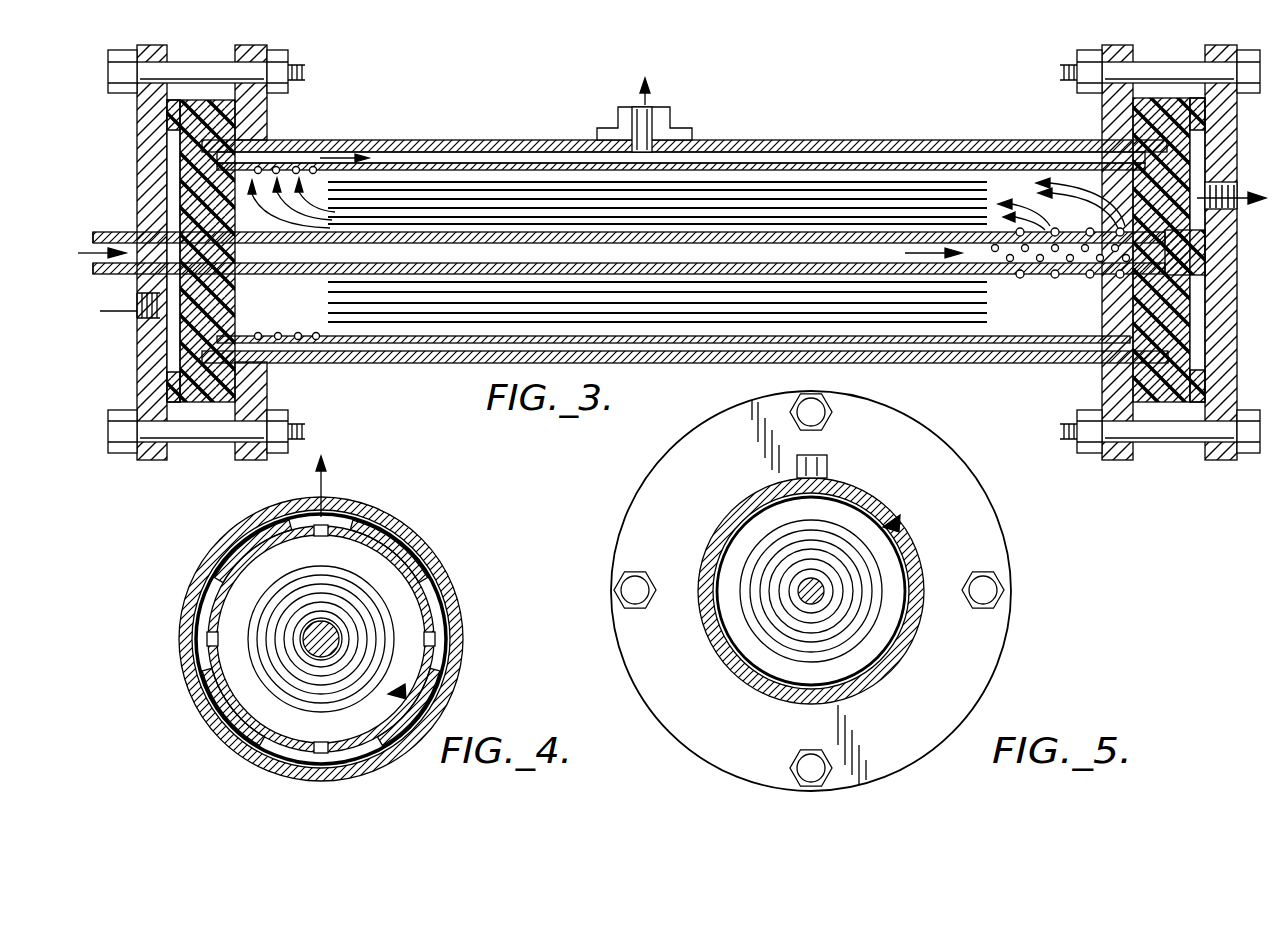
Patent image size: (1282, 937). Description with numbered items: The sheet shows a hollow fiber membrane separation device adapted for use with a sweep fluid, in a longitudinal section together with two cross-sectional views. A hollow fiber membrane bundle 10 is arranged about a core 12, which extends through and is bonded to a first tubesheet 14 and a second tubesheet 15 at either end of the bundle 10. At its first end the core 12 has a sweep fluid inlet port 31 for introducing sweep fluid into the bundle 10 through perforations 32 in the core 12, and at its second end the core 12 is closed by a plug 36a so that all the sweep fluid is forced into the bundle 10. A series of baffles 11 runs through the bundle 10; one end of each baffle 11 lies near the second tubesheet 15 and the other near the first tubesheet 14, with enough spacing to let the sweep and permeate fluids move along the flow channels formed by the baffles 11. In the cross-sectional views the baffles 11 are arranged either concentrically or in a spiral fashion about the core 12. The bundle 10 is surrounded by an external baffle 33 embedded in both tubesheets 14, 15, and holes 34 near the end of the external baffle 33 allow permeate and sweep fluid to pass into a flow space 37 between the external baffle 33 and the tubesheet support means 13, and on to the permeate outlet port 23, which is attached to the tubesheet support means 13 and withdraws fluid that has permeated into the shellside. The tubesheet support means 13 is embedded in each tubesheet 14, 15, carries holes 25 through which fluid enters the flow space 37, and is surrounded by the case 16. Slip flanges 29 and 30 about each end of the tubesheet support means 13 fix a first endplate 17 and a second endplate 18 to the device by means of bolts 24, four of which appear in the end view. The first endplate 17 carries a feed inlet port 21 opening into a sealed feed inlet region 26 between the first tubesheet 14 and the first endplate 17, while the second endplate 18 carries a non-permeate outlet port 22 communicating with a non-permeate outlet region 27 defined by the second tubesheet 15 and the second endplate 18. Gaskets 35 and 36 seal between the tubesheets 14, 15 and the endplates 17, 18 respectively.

In FIG. 3, the hollow fiber membrane bundle 10 is at (1123, 332).
In FIG. 4, the hollow fiber membrane bundle 10 is at (400, 691).
In FIG. 5, the hollow fiber membrane bundle 10 is at (890, 522).
In FIG. 3, the baffles 11 is at (973, 300).
In FIG. 4, the baffles 11 is at (318, 656).
In FIG. 5, the baffles 11 is at (887, 615).
In FIG. 3, the core 12 is at (122, 275).
In FIG. 4, the core 12 is at (332, 646).
In FIG. 5, the core 12 is at (823, 595).
In FIG. 3, the tubesheet support means 13 is at (693, 345).
In FIG. 4, the tubesheet support means 13 is at (418, 590).
In FIG. 5, the tubesheet support means 13 is at (880, 510).
In FIG. 3, the first tubesheet 14 is at (196, 205).
In FIG. 3, the second tubesheet 15 is at (1175, 338).
In FIG. 4, the case 16 is at (372, 515).
In FIG. 3, the first endplate 17 is at (137, 148).
In FIG. 3, the second endplate 18 is at (1222, 303).
In FIG. 3, the feed inlet port 21 is at (134, 312).
In FIG. 3, the non-permeate outlet port 22 is at (1238, 192).
In FIG. 3, the permeate outlet port 23 is at (652, 105).
In FIG. 4, the permeate outlet port 23 is at (330, 500).
In FIG. 5, the permeate outlet port 23 is at (826, 458).
In FIG. 3, the bolts 24 is at (1170, 428).
In FIG. 5, the bolts 24 is at (1001, 592).
In FIG. 4, the holes 25 is at (240, 722).
In FIG. 3, the feed inlet region 26 is at (173, 180).
In FIG. 3, the non-permeate outlet region 27 is at (1200, 284).
In FIG. 3, the slip flange 29 is at (262, 380).
In FIG. 5, the slip flange 29 is at (679, 482).
In FIG. 3, the slip flange 30 is at (1112, 381).
In FIG. 5, the slip flange 30 is at (1003, 553).
In FIG. 3, the sweep fluid inlet port 31 is at (96, 252).
In FIG. 3, the perforations 32 is at (1088, 266).
In FIG. 3, the external baffle 33 is at (882, 348).
In FIG. 3, the holes 34 is at (291, 334).
In FIG. 3, the gasket 35 is at (172, 386).
In FIG. 3, the gasket 36 is at (1200, 370).
In FIG. 3, the plug 36a is at (1205, 247).
In FIG. 3, the flow space 37 is at (460, 353).
In FIG. 4, the flow space 37 is at (440, 612).